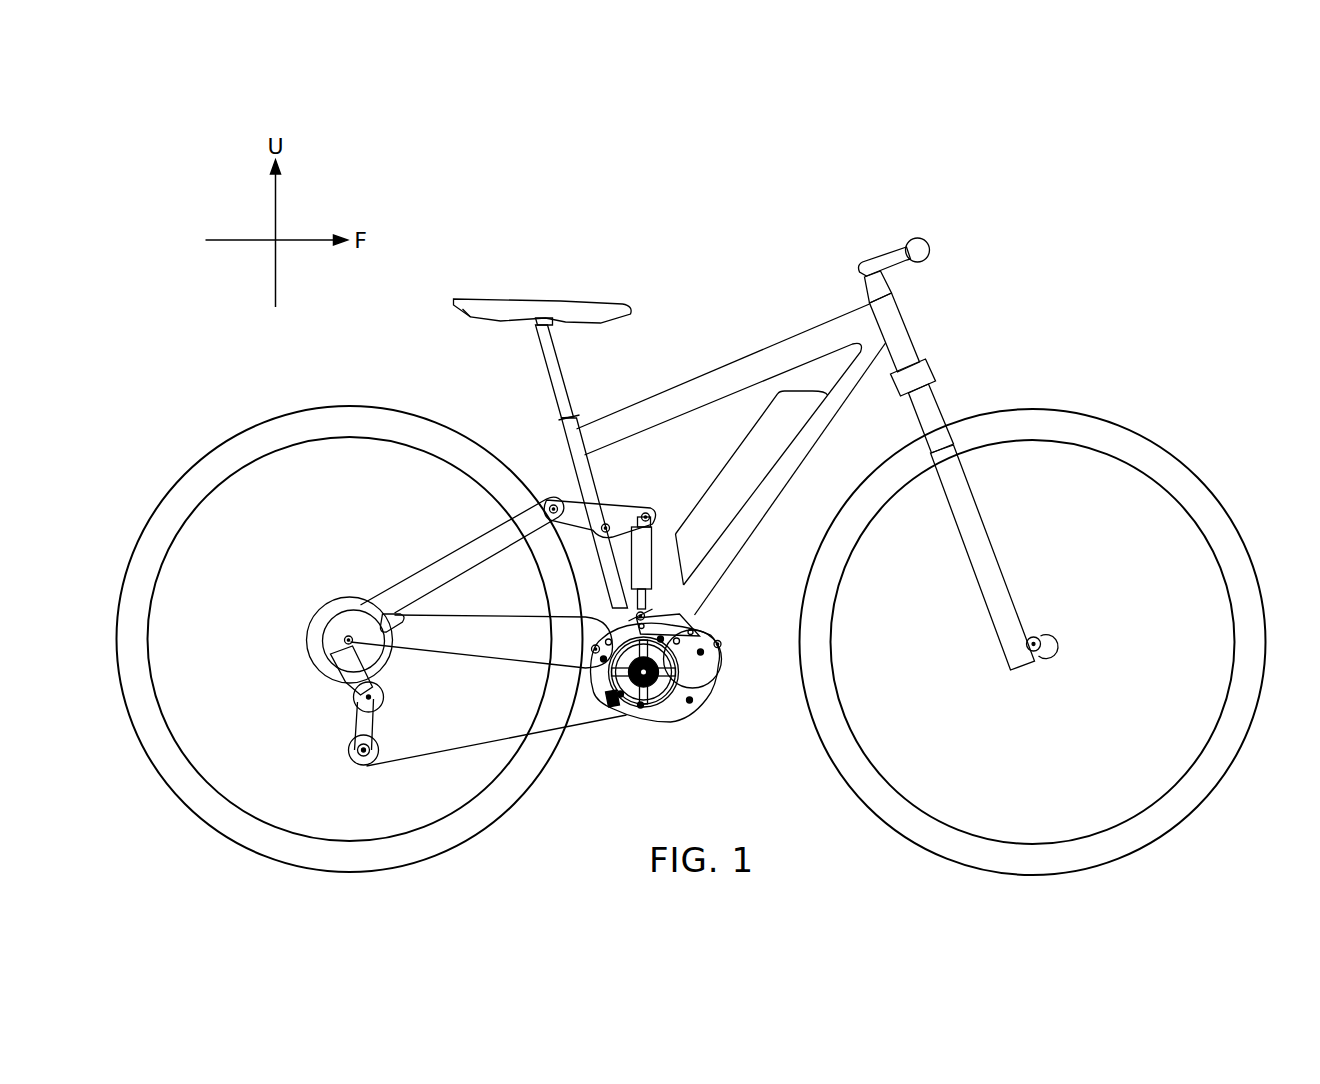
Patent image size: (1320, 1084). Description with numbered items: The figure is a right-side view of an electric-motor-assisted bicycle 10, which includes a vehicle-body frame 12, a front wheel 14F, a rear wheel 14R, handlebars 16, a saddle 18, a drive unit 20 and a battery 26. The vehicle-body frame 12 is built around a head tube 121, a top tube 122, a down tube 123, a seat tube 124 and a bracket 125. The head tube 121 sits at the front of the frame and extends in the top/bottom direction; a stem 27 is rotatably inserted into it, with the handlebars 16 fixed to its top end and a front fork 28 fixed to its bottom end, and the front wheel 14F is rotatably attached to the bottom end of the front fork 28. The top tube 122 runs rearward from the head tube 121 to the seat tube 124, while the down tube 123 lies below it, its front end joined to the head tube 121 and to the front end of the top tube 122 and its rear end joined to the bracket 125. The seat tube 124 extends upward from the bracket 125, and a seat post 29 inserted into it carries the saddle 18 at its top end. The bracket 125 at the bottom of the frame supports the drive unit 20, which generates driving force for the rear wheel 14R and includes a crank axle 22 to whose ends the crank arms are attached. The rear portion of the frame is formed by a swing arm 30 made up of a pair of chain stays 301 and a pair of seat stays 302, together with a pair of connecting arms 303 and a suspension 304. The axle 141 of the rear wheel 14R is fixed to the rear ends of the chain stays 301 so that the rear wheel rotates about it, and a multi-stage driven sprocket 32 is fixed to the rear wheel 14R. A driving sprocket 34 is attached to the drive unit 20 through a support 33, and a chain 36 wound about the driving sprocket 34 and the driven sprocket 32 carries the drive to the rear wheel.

The electric-motor-assisted bicycle 10 is at (1006, 238).
The vehicle-body frame 12 is at (784, 330).
The rear wheel 14R is at (343, 406).
The front wheel 14F is at (1228, 514).
The handlebars 16 is at (922, 240).
The saddle 18 is at (522, 300).
The drive unit 20 is at (704, 692).
The crank axle 22 is at (656, 688).
The battery 26 is at (736, 458).
The stem 27 is at (882, 288).
The front fork 28 is at (1010, 577).
The seat post 29 is at (562, 362).
The swing arm 30 is at (449, 543).
The multi-stage driven sprocket 32 is at (308, 636).
The support 33 is at (722, 640).
The driving sprocket 34 is at (625, 718).
The chain 36 is at (586, 756).
The head tube 121 is at (902, 330).
The top tube 122 is at (734, 370).
The down tube 123 is at (748, 532).
The seat tube 124 is at (592, 470).
The bracket 125 is at (650, 608).
The axle 141 is at (346, 630).
The chain stays 301 is at (440, 660).
The seat stays 302 is at (411, 583).
The connecting arms 303 is at (560, 500).
The suspension 304 is at (654, 538).